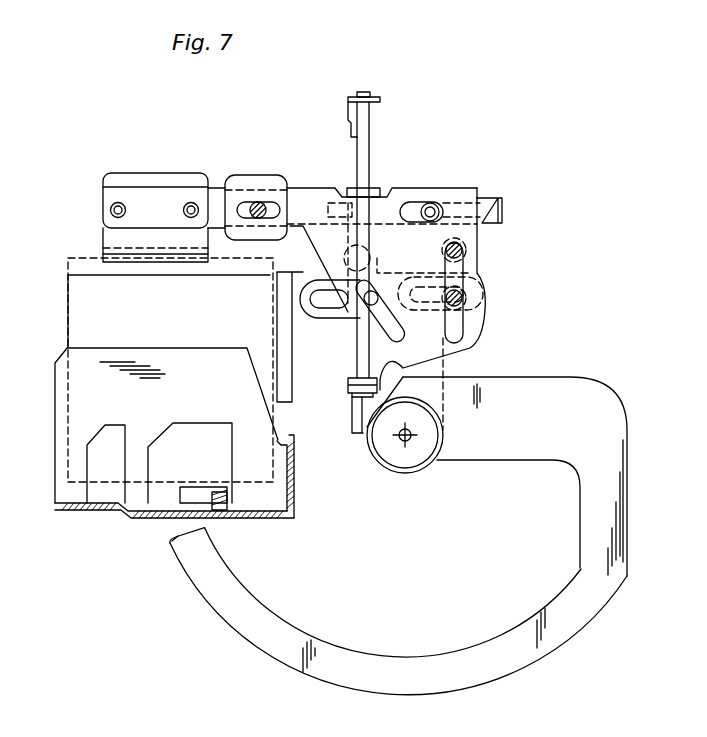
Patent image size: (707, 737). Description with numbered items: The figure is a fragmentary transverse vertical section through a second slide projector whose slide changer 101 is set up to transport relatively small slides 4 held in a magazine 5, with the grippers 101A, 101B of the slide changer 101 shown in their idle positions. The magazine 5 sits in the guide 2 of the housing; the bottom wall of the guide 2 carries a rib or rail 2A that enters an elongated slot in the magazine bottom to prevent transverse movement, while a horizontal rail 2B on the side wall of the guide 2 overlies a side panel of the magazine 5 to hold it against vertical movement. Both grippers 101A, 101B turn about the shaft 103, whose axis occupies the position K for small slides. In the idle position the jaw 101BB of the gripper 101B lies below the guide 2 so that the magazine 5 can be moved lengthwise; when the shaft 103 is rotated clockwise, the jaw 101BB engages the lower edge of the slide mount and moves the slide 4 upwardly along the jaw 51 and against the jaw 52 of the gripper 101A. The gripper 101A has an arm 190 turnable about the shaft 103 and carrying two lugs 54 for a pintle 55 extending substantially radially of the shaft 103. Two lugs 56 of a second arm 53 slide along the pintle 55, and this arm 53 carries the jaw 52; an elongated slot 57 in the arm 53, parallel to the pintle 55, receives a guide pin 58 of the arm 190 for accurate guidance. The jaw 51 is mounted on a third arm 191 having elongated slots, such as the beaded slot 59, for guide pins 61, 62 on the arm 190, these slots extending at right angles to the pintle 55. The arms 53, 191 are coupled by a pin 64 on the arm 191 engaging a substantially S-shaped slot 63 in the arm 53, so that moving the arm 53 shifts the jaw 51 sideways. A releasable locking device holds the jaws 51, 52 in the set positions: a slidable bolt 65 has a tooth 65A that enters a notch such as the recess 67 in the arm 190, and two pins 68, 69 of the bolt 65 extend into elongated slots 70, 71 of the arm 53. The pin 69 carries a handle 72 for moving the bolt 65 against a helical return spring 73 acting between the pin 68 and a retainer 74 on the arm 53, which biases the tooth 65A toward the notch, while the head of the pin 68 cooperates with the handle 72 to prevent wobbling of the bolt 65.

The guide 2 is at (126, 521).
The rib or rail 2A is at (222, 515).
The magazine engaging rib or rail 2B is at (293, 435).
The slide 4 is at (82, 303).
The magazine 5 is at (62, 495).
The jaw 51 is at (283, 382).
The jaw 52 is at (125, 182).
The second arm 53 is at (217, 200).
The eyes or lugs 54 is at (377, 97).
The pintle 55 is at (363, 140).
The eyes or lugs 56 is at (375, 188).
The elongated slot 57 is at (423, 290).
The guide pin 58 is at (467, 253).
The elongated slot 59 is at (328, 300).
The guide pin 61 is at (373, 258).
The guide pin 62 is at (465, 297).
The S-shaped slot 63 is at (405, 340).
The pin 64 is at (345, 258).
The locking member (bolt) 65 is at (299, 187).
The projection or tooth 65A is at (328, 188).
The notch or recess 67 is at (352, 128).
The pin 68 is at (427, 212).
The pin 69 is at (258, 220).
The elongated slot 70 is at (413, 210).
The elongated slot 71 is at (240, 202).
The handle or knob 72 is at (260, 180).
The helical return spring 73 is at (502, 203).
The retainer 74 is at (503, 223).
The slide changer 101 is at (360, 444).
The gripper 101A is at (512, 187).
The gripper 101B is at (400, 670).
The jaw 101BB is at (176, 534).
The shaft 103 is at (408, 442).
The arm 190 is at (437, 368).
The third arm 191 is at (297, 327).
The position of shaft axis K is at (417, 434).